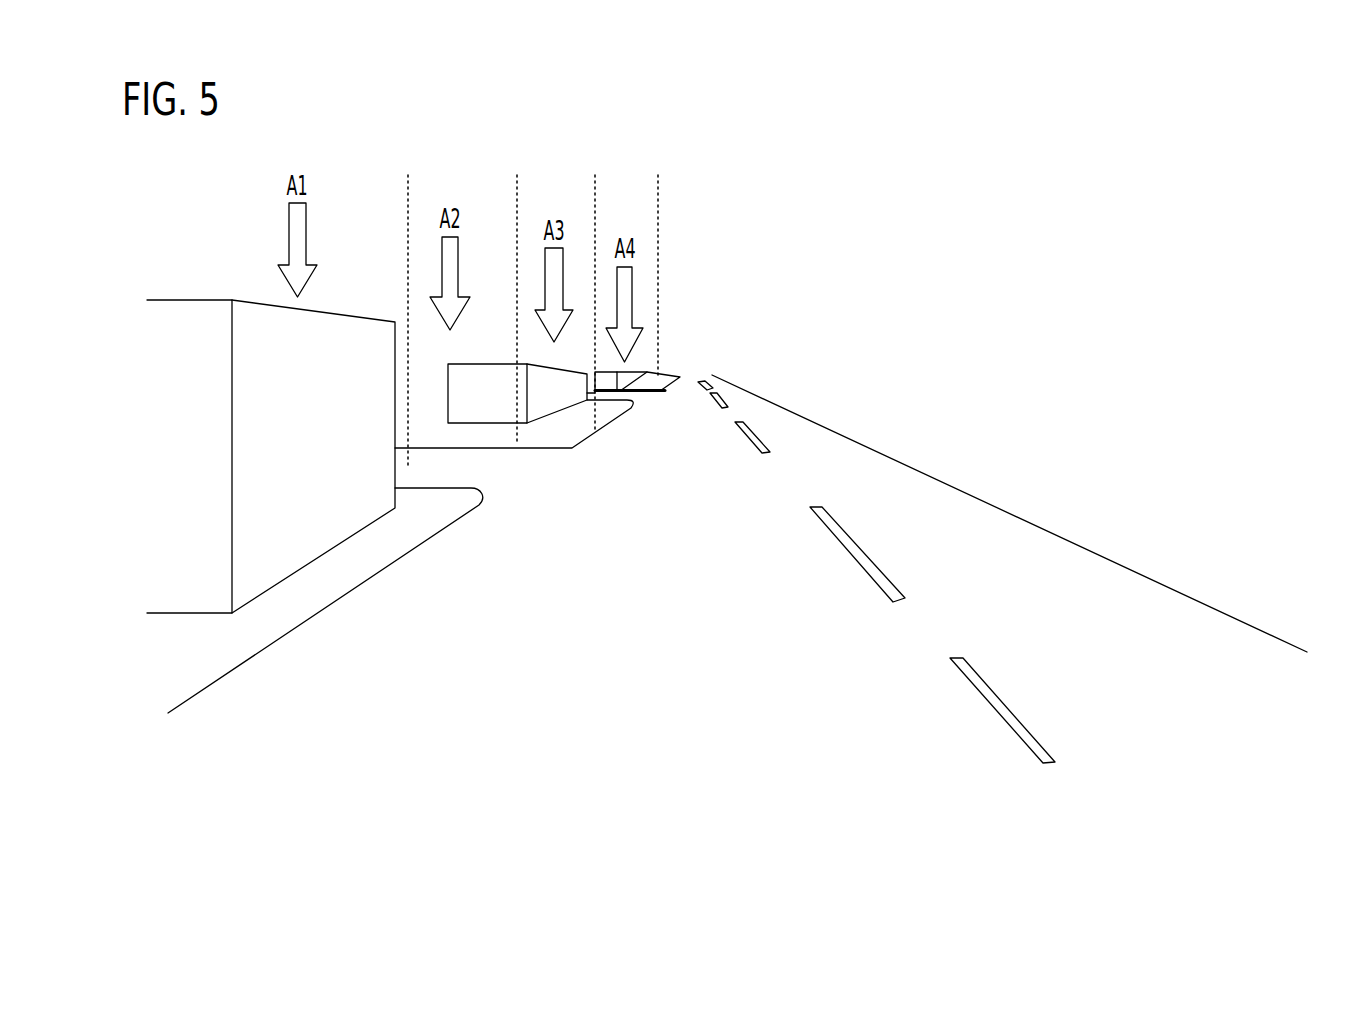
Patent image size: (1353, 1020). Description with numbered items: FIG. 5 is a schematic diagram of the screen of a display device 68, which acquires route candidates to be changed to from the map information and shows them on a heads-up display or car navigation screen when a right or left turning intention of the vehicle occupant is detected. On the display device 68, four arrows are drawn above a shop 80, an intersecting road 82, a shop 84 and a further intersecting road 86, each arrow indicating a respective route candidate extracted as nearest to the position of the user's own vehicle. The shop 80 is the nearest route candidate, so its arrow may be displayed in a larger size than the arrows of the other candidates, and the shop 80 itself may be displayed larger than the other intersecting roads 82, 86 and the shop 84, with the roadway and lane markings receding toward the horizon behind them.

The display device 68 is at (755, 145).
The shop 80 is at (300, 553).
The intersecting road 82 is at (473, 466).
The shop 84 is at (573, 422).
The intersecting road 86 is at (633, 393).